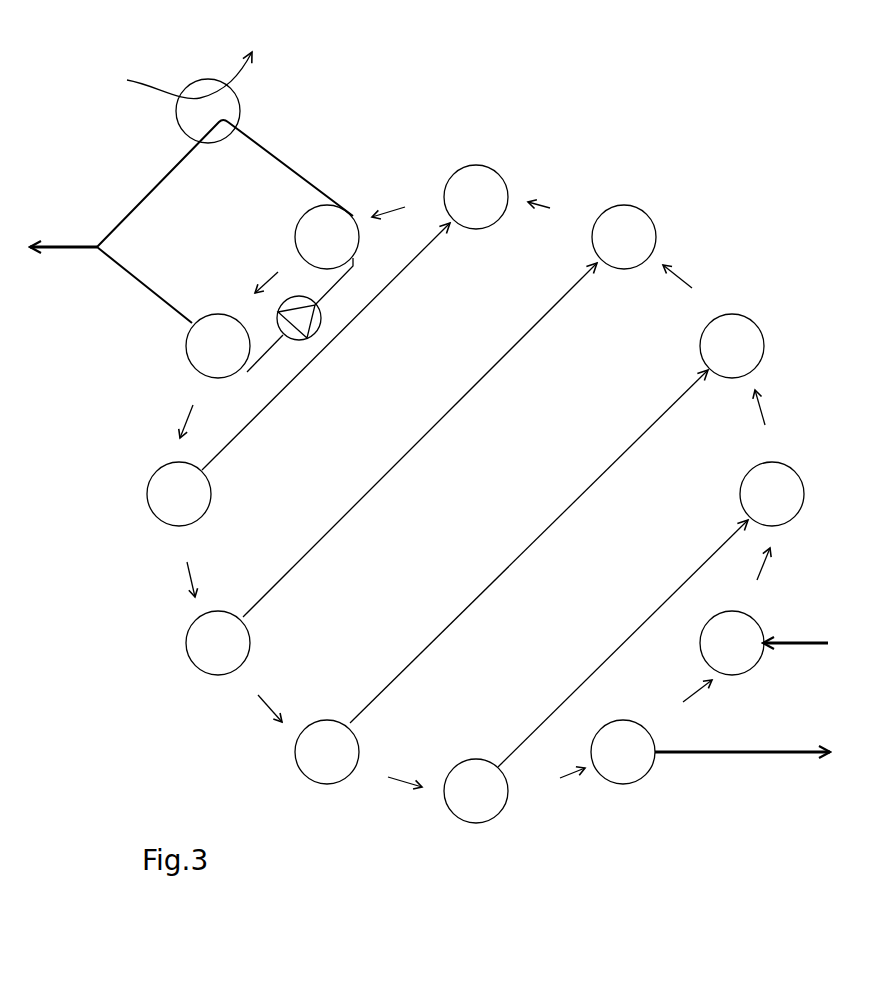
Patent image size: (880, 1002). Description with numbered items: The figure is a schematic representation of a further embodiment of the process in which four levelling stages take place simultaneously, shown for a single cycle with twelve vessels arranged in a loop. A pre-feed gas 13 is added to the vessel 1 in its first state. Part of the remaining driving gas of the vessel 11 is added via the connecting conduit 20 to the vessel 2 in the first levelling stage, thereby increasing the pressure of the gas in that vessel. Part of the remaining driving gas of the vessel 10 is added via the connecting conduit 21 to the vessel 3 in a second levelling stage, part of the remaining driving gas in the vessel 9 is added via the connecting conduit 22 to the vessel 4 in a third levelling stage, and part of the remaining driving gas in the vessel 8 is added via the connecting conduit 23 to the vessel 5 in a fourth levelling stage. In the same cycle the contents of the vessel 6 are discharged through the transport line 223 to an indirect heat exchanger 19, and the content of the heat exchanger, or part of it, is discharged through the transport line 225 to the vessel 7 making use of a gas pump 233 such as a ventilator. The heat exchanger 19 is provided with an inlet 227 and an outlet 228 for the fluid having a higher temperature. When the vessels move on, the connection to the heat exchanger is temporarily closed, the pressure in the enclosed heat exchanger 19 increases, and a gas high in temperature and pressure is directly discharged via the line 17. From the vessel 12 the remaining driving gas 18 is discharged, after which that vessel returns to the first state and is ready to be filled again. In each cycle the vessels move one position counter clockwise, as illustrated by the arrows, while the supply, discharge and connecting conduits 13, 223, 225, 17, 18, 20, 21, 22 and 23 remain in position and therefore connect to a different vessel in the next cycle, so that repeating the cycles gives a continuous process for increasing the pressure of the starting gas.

The vessel 1 is at (732, 656).
The vessel 2 is at (772, 505).
The vessel 3 is at (740, 348).
The vessel 4 is at (634, 237).
The vessel 5 is at (482, 197).
The vessel 6 is at (327, 227).
The vessel 7 is at (218, 341).
The vessel 8 is at (156, 494).
The vessel 9 is at (193, 643).
The vessel 10 is at (305, 752).
The vessel 11 is at (460, 795).
The vessel 12 is at (617, 765).
The pre-feed gas 13 is at (795, 631).
The line 17 is at (63, 234).
The remaining driving gas 18 is at (742, 740).
The indirect heat exchanger 19 is at (224, 111).
The connecting conduit 20 is at (642, 628).
The connecting conduit 21 is at (573, 508).
The connecting conduit 22 is at (465, 395).
The connecting conduit 23 is at (375, 302).
The transport line 223 is at (285, 162).
The transport line 225 is at (118, 267).
The inlet 227 is at (142, 76).
The outlet 228 is at (244, 57).
The gas pump 233 is at (315, 338).